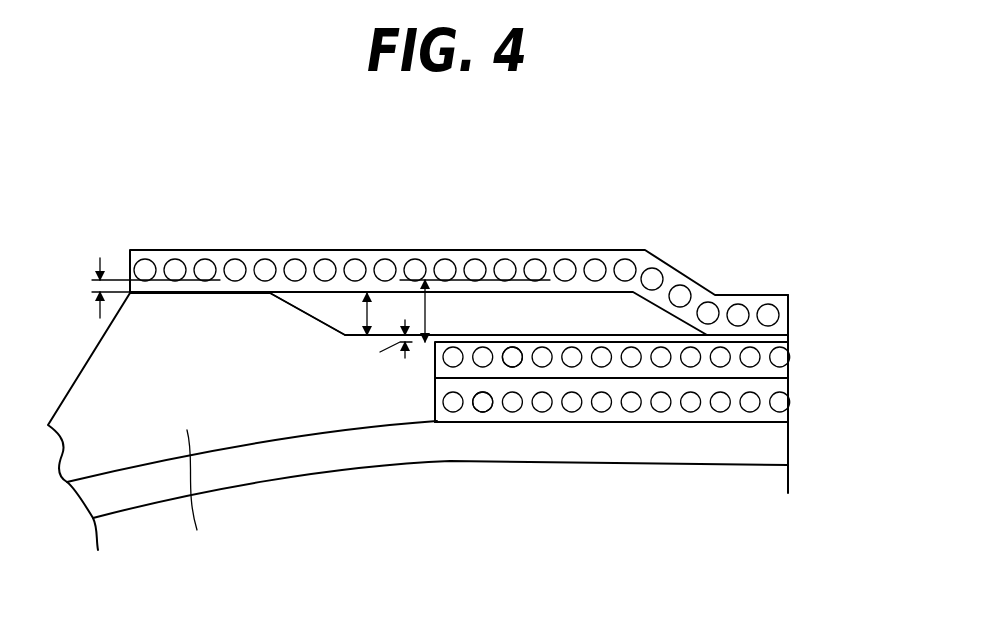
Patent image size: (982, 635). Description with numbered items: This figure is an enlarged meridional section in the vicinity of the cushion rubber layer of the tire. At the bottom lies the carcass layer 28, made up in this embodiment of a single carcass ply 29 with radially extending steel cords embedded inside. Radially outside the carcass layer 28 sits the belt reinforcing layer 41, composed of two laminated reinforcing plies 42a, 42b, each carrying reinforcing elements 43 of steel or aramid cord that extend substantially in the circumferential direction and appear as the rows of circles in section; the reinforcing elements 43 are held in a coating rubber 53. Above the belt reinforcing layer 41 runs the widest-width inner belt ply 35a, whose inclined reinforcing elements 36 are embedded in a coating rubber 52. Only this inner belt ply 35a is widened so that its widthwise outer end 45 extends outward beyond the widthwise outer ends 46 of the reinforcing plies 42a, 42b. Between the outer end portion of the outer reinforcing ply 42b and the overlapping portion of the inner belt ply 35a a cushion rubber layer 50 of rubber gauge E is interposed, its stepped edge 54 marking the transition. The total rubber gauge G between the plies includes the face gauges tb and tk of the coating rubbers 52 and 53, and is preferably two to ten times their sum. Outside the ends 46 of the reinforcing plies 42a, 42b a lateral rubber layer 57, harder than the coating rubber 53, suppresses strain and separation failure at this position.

The carcass layer 28 is at (397, 467).
The carcass ply 29 is at (280, 453).
The lateral rubber layer 57 is at (195, 499).
The widthwise outer end of inner belt ply 45 is at (128, 272).
The coating rubber of belt ply 52 is at (578, 262).
The reinforcing elements of belt plies 36 is at (708, 306).
The inner belt ply 35a is at (753, 308).
The bobbin step portion 54 is at (270, 293).
The cushion rubber layer 50 is at (325, 308).
The widthwise outer ends of reinforcing plies 46 is at (435, 395).
The outer reinforcing ply 42b is at (677, 352).
The inner reinforcing ply 42a is at (585, 412).
The reinforcing element 43 is at (512, 357).
The coating rubber of reinforcing ply 53 is at (620, 412).
The belt reinforcing layer 41 is at (708, 423).
The coating rubber gauge of belt ply tb is at (97, 288).
The rubber gauge of cushion rubber layer E is at (352, 314).
The rubber gauge between plies G is at (436, 311).
The coating rubber gauge of reinforcing ply tk is at (383, 347).